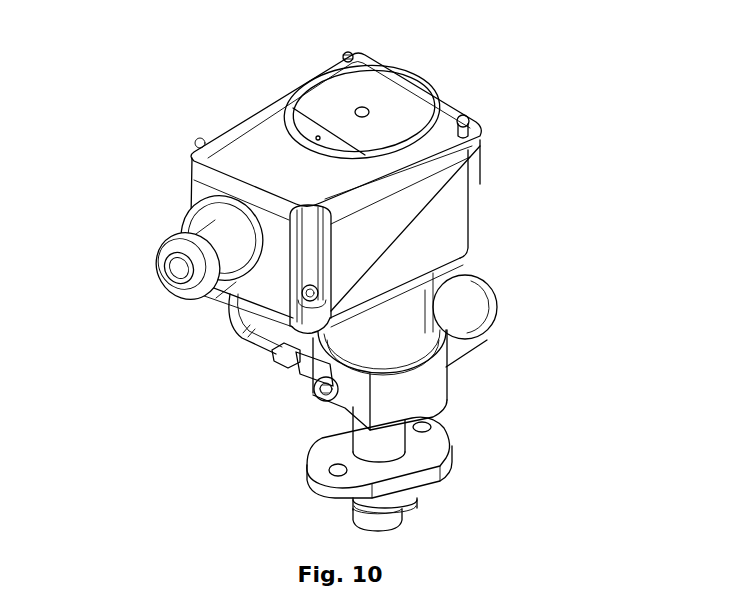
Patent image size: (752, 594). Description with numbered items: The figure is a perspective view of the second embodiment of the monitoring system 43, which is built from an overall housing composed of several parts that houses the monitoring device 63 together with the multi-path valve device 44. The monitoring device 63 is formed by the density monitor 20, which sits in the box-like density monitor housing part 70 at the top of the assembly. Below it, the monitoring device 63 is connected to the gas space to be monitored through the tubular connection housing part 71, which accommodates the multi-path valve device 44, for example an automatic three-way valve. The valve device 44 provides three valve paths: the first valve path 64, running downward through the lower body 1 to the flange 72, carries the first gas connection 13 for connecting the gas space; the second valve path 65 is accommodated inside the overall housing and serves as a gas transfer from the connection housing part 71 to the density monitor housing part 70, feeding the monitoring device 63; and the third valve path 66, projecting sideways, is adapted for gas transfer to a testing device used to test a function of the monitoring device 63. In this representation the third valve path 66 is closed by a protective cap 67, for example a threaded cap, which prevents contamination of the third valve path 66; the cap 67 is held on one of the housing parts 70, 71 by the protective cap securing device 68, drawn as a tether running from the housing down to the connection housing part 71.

The valve body 1 is at (408, 389).
The first gas connection 13 is at (378, 517).
The density monitor 20 is at (288, 178).
The monitoring system 43 is at (611, 148).
The multi-path valve device 44 is at (470, 367).
The monitoring device 63 is at (263, 120).
The first valve path 64 is at (387, 440).
The second valve path 65 is at (403, 330).
The third valve path 66 is at (495, 289).
The protective cap 67 is at (472, 304).
The protective cap securing device 68 is at (222, 333).
The density monitor housing part 70 is at (427, 160).
The connection housing part 71 is at (366, 340).
The flange 72 is at (324, 434).